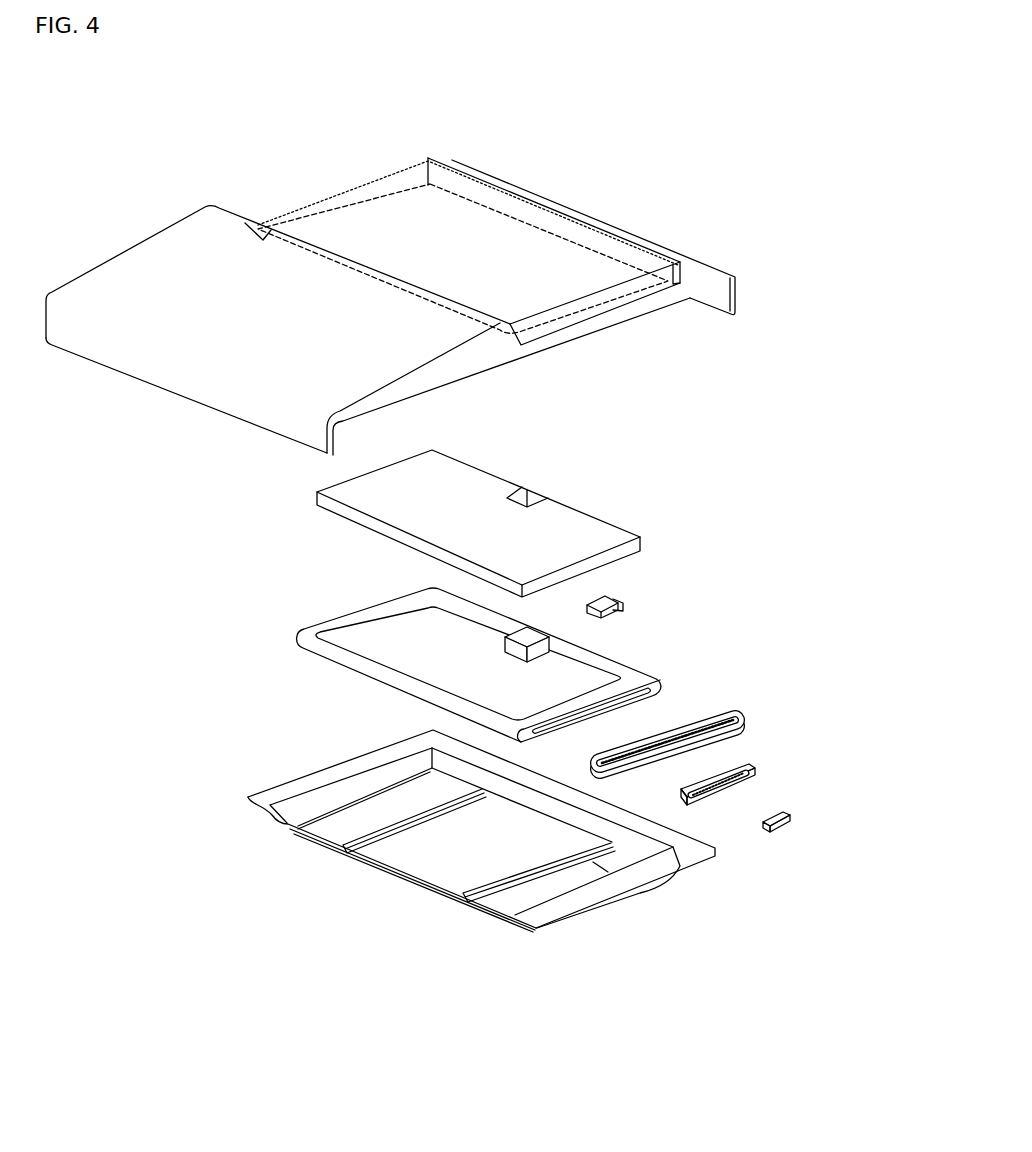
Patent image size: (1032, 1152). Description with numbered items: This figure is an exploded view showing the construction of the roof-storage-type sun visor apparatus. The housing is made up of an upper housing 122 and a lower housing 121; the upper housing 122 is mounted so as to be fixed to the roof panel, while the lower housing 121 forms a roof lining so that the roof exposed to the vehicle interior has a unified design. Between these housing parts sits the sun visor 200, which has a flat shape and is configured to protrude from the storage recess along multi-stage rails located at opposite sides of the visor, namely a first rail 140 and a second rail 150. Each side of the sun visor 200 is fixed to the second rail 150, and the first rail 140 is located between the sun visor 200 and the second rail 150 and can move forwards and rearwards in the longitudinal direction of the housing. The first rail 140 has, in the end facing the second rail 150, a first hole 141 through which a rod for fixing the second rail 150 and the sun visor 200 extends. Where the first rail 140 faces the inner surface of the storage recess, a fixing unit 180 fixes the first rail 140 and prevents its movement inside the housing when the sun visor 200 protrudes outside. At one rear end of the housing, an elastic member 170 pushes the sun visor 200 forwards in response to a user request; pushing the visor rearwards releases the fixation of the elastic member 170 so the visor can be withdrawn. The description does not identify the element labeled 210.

The lower housing 121 is at (583, 888).
The upper housing 122 is at (184, 296).
The first rail 140 is at (720, 790).
The first hole 141 is at (743, 787).
The second rail 150 is at (790, 823).
The elastic member 170 is at (615, 597).
The fixing unit 180 is at (508, 321).
The sun visor 200 is at (377, 517).
The gasket 210 is at (723, 733).